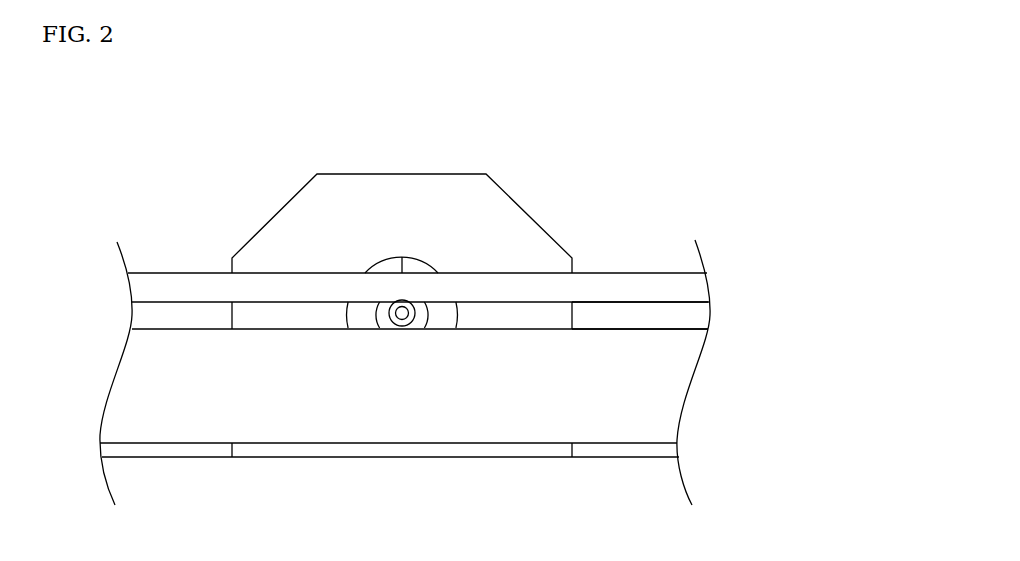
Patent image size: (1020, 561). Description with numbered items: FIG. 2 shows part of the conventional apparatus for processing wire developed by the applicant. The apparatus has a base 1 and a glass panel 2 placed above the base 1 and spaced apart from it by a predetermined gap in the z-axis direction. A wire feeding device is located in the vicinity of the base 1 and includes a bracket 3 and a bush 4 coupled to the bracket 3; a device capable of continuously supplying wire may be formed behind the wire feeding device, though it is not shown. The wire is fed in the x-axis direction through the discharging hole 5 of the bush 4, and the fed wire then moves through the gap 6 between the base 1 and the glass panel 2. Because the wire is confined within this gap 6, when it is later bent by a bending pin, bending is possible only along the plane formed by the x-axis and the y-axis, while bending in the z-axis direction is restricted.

The base 1 is at (655, 387).
The glass panel 2 is at (622, 285).
The bracket 3 is at (408, 195).
The bush 4 is at (363, 317).
The discharging hole 5 is at (402, 318).
The gap 6 is at (620, 317).